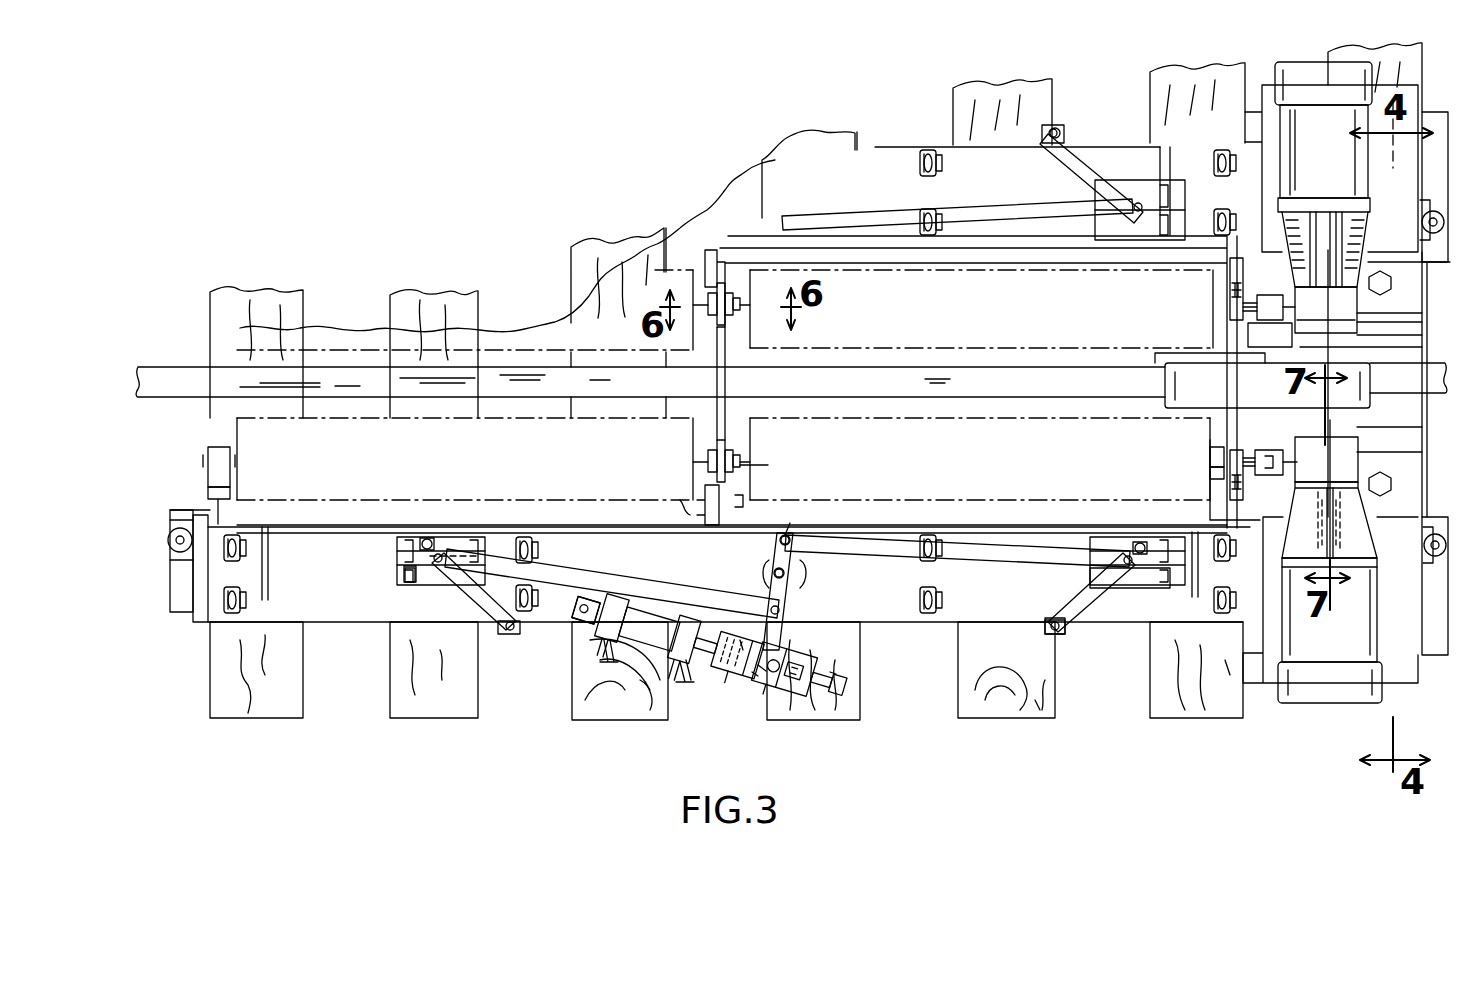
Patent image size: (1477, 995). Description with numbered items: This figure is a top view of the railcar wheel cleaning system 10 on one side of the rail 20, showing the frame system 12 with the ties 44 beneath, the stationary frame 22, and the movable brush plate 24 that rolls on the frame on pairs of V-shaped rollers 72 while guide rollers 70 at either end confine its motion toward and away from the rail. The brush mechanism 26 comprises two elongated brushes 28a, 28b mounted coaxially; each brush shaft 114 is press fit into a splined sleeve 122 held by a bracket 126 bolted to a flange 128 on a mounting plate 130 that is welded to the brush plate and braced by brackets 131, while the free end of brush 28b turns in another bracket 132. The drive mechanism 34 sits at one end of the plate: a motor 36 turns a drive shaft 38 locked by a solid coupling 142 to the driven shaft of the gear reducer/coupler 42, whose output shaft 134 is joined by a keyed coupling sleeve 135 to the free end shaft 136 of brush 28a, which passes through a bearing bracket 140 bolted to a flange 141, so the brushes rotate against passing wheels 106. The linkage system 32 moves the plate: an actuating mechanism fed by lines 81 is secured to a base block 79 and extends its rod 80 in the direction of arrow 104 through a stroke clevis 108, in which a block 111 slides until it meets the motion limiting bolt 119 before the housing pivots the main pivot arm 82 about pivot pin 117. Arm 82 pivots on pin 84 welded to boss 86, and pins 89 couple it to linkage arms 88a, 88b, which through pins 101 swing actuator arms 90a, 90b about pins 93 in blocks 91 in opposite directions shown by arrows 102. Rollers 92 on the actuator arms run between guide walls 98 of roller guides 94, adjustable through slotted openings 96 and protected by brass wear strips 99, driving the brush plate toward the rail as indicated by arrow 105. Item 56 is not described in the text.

The wheel cleaning system 10 is at (520, 740).
The frame system 12 is at (804, 202).
The rail 20 is at (325, 375).
The stationary frame 22 is at (186, 628).
The movable brush plate 24 is at (338, 622).
The brush mechanism 26 is at (818, 338).
The elongated brush 28a is at (1001, 324).
The elongated brush 28b is at (553, 320).
The linkage system 32 is at (684, 716).
The drive mechanism 34 is at (1257, 137).
The motor 36 is at (1325, 138).
The drive shaft 38 is at (1355, 548).
The gear reducer/coupler 42 is at (1420, 330).
The railroad ties 44 is at (280, 718).
The carriage frame 56 is at (605, 420).
The guide roller 70 is at (167, 527).
The rollers 72 is at (230, 570).
The base block 79 is at (590, 635).
The movable rod 80 is at (694, 677).
The lines 81 is at (614, 669).
The main pivot arm 82 is at (800, 625).
The pin 84 is at (778, 560).
The boss 86 is at (768, 573).
The pins 89 is at (825, 587).
The linkage arm 88a is at (880, 560).
The linkage arm 88b is at (577, 583).
The actuator arm 90a is at (1097, 624).
The actuator arm 90b is at (490, 630).
The blocks 91 is at (509, 634).
The rollers 92 is at (405, 553).
The pins 93 is at (520, 630).
The roller guides 94 is at (429, 585).
The slotted adjustment openings 96 is at (406, 582).
The guide walls 98 is at (418, 582).
The brass wear strip 99 is at (1173, 215).
The pins 101 is at (395, 590).
The reference arrows 102 is at (990, 634).
The arrow 104 is at (850, 685).
The reference arrow 105 is at (485, 433).
The wheels 106 is at (1148, 384).
The stroke clevis 108 is at (765, 695).
The block 111 is at (750, 680).
The stainless steel shaft 114 is at (776, 462).
The pivot pin 117 is at (762, 672).
The motion limiting bolt 119 is at (855, 680).
The splined sleeve 122 is at (730, 308).
The bracket 126 is at (722, 330).
The flange 128 is at (680, 500).
The mounting plate 130 is at (317, 523).
The brackets 131 is at (275, 552).
The bracket 132 is at (218, 452).
The output shaft 134 is at (1288, 312).
The keyed coupling sleeve 135 is at (1210, 474).
The free end shaft 136 is at (1213, 462).
The bracket 140 is at (1238, 453).
The flange 141 is at (1133, 273).
The solid coupling 142 is at (1343, 530).